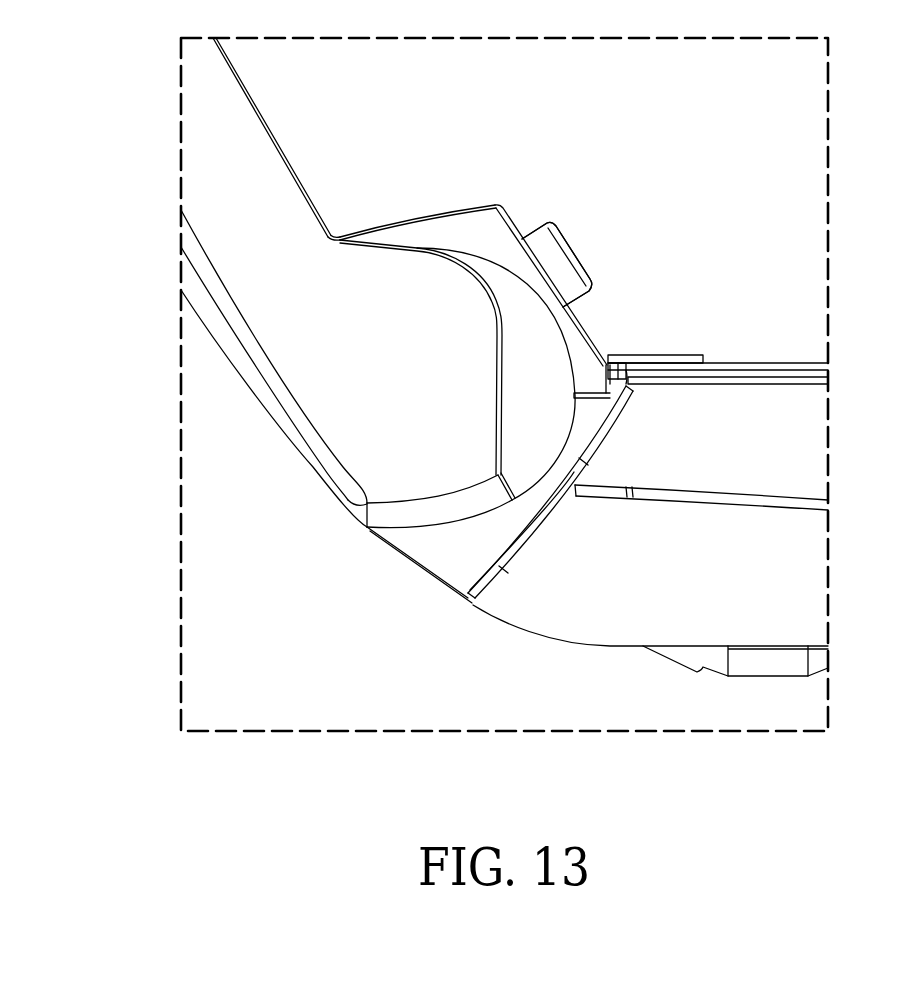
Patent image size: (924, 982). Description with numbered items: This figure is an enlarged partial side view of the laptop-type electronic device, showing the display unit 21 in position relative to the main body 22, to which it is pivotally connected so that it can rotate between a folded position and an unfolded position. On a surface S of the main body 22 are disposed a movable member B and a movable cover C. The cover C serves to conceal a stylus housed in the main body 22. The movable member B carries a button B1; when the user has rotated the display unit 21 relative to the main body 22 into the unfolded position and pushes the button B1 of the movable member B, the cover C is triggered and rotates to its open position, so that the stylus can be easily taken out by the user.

The display unit 21 is at (189, 160).
The main body 22 is at (816, 448).
The surface S is at (516, 210).
The movable member B is at (553, 208).
The button B1 is at (574, 258).
The cover C is at (680, 357).